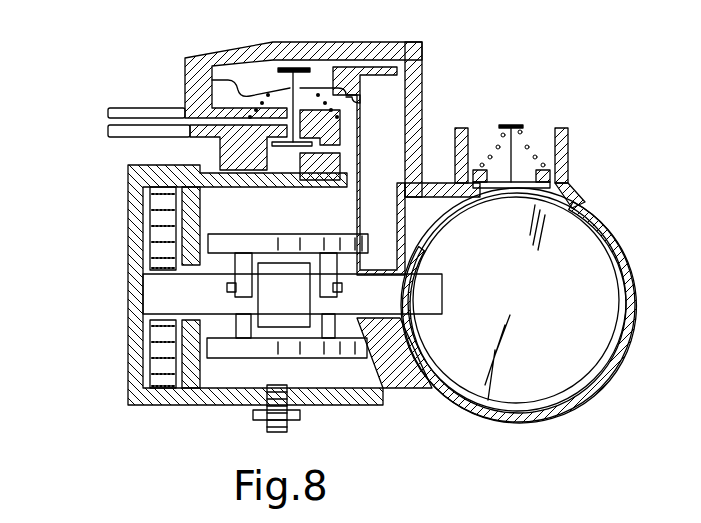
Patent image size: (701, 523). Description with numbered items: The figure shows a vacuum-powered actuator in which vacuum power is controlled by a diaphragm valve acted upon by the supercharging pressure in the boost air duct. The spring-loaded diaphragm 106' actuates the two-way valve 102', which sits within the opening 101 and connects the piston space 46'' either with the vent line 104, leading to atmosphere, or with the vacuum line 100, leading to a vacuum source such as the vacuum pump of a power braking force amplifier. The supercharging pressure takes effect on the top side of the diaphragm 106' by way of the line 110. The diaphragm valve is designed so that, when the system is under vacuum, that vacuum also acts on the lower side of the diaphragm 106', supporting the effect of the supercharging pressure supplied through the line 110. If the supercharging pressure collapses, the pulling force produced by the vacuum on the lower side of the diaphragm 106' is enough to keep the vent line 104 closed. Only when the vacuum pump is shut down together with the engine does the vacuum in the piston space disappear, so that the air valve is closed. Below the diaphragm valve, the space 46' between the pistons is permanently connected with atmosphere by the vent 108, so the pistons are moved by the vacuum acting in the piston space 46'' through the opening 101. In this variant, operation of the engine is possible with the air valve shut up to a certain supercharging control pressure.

The spring-loaded diaphragm 106' is at (303, 63).
The two-way valve 102' is at (305, 77).
The line 110 is at (400, 126).
The vacuum line 100 is at (115, 122).
The vent line 104 is at (195, 138).
The vent 108 is at (130, 257).
The space between the pistons 46' is at (220, 285).
The piston space 46'' is at (287, 279).
The opening 101 is at (350, 170).